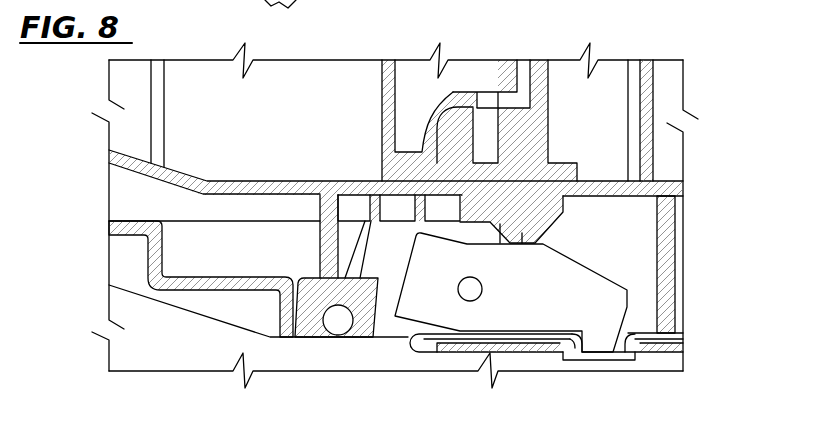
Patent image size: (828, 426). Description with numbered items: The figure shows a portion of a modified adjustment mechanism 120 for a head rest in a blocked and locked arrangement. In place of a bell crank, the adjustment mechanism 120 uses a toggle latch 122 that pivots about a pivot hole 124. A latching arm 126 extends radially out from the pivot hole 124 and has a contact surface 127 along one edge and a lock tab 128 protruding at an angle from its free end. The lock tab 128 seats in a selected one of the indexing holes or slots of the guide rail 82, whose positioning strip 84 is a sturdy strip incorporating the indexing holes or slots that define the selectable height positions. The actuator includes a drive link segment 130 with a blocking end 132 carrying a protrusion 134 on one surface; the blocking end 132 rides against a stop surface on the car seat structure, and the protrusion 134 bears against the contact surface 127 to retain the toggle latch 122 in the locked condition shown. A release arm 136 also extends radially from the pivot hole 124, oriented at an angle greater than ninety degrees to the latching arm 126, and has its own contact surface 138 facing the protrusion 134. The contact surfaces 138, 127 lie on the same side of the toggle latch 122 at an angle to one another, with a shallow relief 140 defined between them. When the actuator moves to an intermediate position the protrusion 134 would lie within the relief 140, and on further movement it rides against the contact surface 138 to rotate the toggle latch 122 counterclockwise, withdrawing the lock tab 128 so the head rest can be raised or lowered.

The adjustment mechanism 120 is at (343, 138).
The toggle latch 122 is at (570, 268).
The pivot hole 124 is at (459, 283).
The latching arm 126 is at (543, 307).
The contact surface 127 is at (545, 233).
The lock tab 128 is at (613, 353).
The drive link segment 130 is at (400, 178).
The blocking end 132 is at (600, 120).
The protrusion 134 is at (521, 243).
The release arm 136 is at (366, 342).
The contact surface 138 is at (457, 245).
The relief 140 is at (468, 243).
The slide rail 82 is at (689, 332).
The positioning strip 84 is at (467, 346).